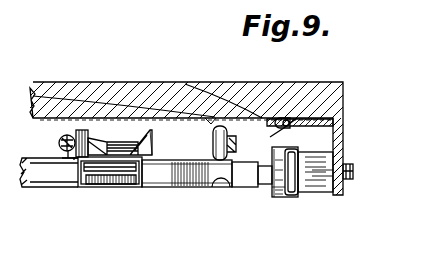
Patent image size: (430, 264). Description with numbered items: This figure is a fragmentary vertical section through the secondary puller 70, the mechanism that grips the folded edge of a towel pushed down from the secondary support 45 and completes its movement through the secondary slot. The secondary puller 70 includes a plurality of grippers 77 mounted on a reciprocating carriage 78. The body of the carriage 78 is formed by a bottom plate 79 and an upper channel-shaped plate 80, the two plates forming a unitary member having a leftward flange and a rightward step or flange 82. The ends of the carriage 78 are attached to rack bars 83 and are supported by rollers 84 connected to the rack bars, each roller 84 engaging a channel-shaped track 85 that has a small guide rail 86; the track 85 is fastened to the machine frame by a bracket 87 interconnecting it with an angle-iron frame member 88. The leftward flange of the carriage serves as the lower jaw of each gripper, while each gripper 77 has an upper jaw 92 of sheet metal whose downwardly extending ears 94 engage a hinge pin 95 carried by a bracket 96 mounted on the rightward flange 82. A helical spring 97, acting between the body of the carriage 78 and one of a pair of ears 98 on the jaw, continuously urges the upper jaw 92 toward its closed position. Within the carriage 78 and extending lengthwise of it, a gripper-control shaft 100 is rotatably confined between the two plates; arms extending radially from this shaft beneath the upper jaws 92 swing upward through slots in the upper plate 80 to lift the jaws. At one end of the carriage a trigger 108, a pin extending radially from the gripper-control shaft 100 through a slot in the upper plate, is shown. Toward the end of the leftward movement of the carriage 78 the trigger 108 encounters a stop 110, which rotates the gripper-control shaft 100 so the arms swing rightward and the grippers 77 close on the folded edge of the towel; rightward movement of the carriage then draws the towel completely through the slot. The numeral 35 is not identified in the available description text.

The frame 35 is at (10, 75).
The secondary support 45 is at (148, 97).
The secondary puller 70 is at (120, 197).
The grippers 77 is at (164, 140).
The reciprocating carriage 78 is at (187, 198).
The bottom plate 79 is at (204, 188).
The upper channel-shaped plate 80 is at (182, 188).
The rightward step or flange 82 is at (245, 186).
The rack bars 83 is at (256, 187).
The rollers 84 is at (276, 197).
The channel-shaped track 85 is at (322, 112).
The guide rail 86 is at (302, 193).
The bracket 87 is at (318, 190).
The angle-iron frame member 88 is at (338, 148).
The upper jaw 92 is at (108, 142).
The ears 94 is at (90, 188).
The hinge pin 95 is at (107, 188).
The bracket 96 is at (70, 187).
The helical spring 97 is at (60, 133).
The ears 98 is at (72, 133).
The gripper-control shaft 100 is at (35, 166).
The trigger 108 is at (265, 118).
The stop 110 is at (225, 124).